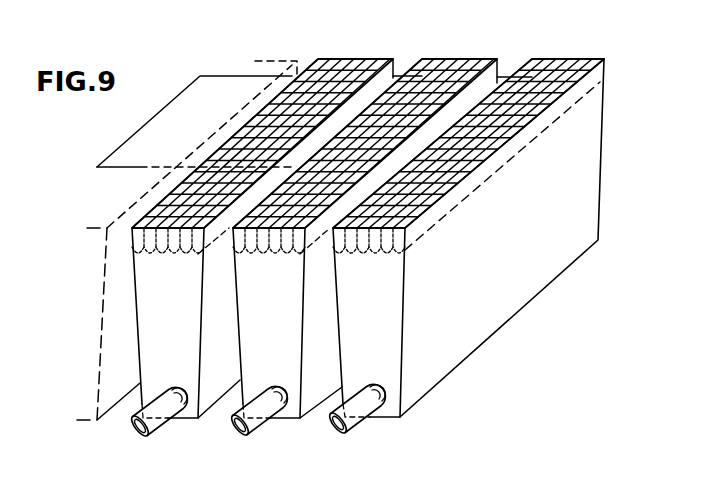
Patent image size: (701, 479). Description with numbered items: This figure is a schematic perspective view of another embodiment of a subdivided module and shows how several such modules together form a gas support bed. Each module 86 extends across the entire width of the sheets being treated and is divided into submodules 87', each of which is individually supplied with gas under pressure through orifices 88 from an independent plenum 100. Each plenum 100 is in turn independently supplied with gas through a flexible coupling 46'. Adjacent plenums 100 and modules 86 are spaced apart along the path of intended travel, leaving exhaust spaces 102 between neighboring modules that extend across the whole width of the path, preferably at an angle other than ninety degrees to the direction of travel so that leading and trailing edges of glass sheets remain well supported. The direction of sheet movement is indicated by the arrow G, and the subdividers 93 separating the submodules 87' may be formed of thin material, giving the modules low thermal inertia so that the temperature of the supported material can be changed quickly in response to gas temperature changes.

The module 86 is at (402, 56).
The submodule 87' is at (502, 224).
The orifice 88 is at (375, 249).
The partition dividers 93 is at (390, 253).
The plenum 100 is at (348, 329).
The exhaust space 102 is at (308, 352).
The flexible coupling 46' is at (257, 420).
The gas flow G is at (150, 118).